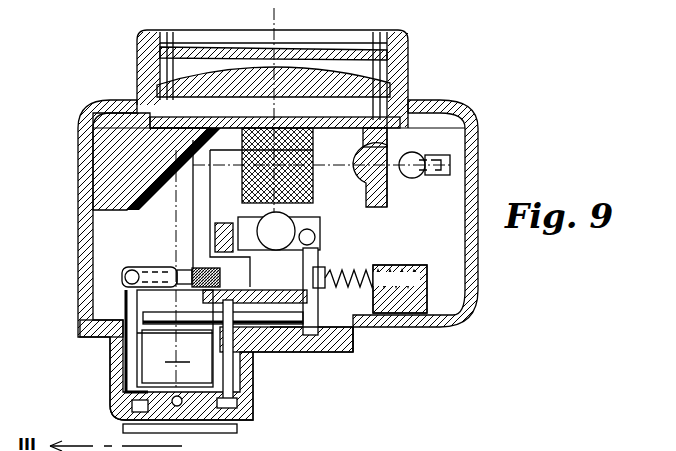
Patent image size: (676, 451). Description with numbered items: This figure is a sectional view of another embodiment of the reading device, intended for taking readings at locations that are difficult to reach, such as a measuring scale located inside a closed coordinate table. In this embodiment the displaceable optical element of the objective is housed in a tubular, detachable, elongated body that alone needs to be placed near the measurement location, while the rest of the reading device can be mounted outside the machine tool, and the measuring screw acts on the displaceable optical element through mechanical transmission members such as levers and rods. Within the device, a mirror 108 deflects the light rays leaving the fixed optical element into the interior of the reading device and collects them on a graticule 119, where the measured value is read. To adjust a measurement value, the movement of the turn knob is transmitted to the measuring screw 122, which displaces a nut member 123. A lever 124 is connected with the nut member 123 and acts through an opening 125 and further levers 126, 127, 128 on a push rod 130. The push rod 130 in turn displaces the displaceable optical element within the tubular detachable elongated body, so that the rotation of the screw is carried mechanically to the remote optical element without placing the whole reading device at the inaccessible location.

The mirror 108 is at (157, 362).
The graticule 119 is at (342, 127).
The measuring screw 122 is at (293, 212).
The nut member 123 is at (313, 227).
The lever 124 is at (316, 262).
The opening 125 is at (352, 353).
The further lever 126 is at (288, 340).
The further lever 127 is at (238, 403).
The further lever 128 is at (207, 402).
The push rod 130 is at (157, 402).